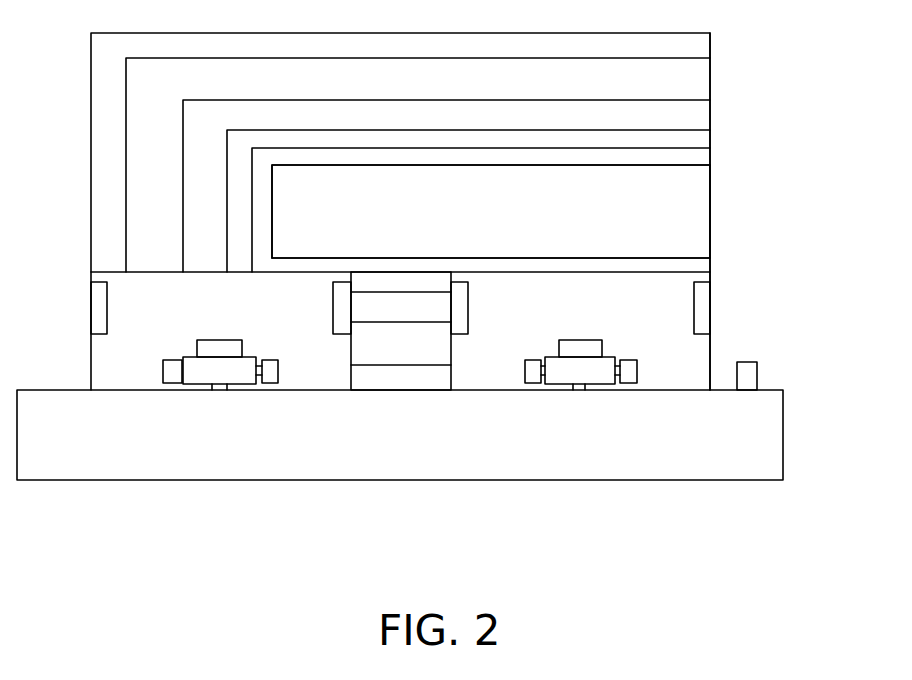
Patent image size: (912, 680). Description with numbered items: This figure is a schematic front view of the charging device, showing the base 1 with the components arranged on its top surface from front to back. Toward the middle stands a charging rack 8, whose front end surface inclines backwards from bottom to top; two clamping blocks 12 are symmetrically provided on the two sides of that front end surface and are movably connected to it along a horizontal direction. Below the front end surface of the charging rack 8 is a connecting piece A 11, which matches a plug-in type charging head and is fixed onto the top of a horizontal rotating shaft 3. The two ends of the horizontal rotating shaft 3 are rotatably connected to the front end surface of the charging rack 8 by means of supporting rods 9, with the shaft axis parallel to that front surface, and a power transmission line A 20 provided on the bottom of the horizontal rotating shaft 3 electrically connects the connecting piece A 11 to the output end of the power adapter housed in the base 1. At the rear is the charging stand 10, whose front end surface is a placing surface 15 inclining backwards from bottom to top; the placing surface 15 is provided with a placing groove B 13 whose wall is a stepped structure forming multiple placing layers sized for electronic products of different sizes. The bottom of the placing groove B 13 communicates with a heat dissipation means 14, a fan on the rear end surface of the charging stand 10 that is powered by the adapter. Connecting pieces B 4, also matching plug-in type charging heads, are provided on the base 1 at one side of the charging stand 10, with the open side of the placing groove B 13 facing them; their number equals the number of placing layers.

The base 1 is at (42, 443).
The horizontal rotating shaft 3 is at (598, 372).
The connecting piece B 4 is at (747, 375).
The charging rack 8 is at (300, 318).
The supporting rod 9 is at (270, 373).
The charging stand 10 is at (818, 148).
The connecting piece A 11 is at (577, 347).
The clamping block 12 is at (100, 313).
The placing groove B 13 is at (365, 92).
The heat dissipation means 14 is at (652, 191).
The placing surface 15 is at (675, 47).
The power transmission line A 20 is at (222, 386).